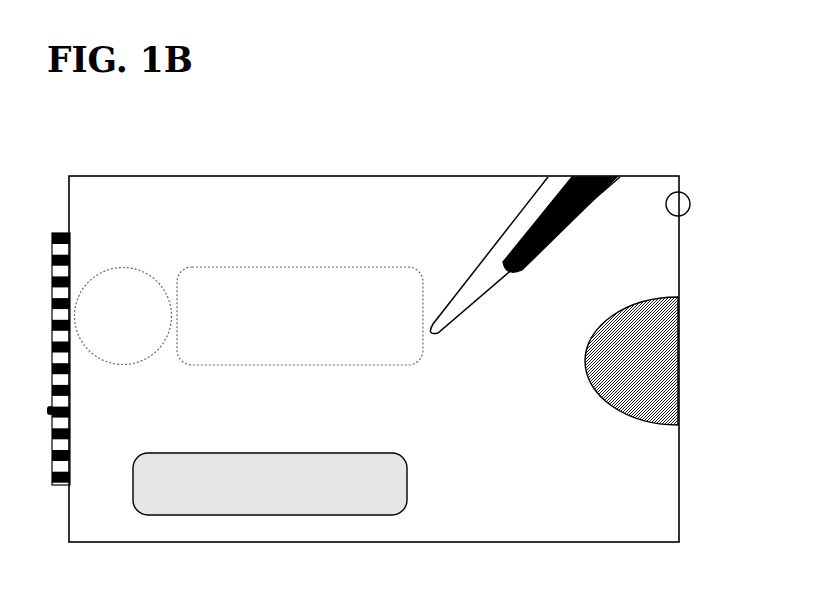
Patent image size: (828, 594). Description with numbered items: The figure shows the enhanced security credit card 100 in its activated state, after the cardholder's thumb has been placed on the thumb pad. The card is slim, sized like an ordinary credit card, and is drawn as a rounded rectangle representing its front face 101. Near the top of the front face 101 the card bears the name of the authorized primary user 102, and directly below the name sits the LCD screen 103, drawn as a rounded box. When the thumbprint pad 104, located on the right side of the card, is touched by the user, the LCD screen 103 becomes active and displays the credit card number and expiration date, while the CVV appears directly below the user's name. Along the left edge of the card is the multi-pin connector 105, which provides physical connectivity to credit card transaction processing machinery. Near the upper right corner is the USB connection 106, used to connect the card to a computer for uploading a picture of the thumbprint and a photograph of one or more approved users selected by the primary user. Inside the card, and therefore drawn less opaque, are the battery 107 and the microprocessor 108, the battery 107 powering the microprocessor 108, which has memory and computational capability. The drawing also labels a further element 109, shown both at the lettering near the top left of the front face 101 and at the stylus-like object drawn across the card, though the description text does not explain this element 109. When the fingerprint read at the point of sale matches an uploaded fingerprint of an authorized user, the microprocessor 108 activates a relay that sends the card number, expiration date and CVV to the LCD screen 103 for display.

The enhanced security credit card 100 is at (485, 145).
The front face 101 is at (350, 195).
The name of the authorized primary user 102 is at (202, 424).
The LCD screen 103 is at (145, 473).
The thumbprint pad 104 is at (683, 313).
The multi-pin connector 105 is at (63, 233).
The USB connection 106 is at (684, 192).
The battery 107 is at (123, 316).
The microprocessor 108 is at (300, 316).
The stylus input / handwritten code 109 is at (147, 193).